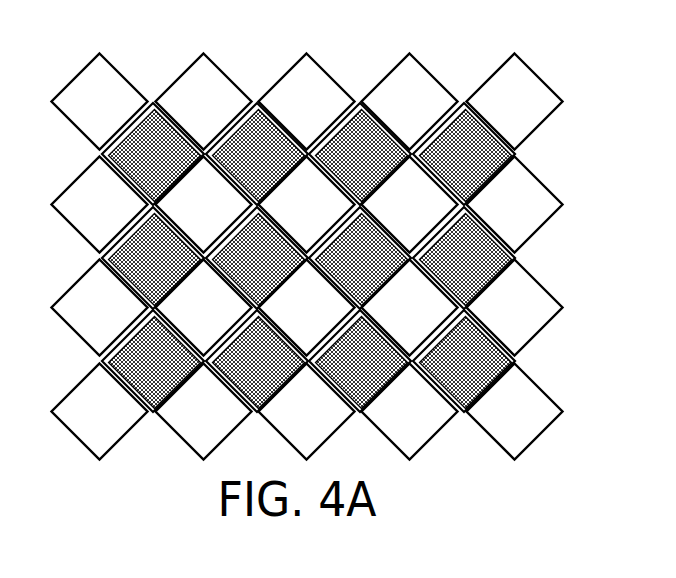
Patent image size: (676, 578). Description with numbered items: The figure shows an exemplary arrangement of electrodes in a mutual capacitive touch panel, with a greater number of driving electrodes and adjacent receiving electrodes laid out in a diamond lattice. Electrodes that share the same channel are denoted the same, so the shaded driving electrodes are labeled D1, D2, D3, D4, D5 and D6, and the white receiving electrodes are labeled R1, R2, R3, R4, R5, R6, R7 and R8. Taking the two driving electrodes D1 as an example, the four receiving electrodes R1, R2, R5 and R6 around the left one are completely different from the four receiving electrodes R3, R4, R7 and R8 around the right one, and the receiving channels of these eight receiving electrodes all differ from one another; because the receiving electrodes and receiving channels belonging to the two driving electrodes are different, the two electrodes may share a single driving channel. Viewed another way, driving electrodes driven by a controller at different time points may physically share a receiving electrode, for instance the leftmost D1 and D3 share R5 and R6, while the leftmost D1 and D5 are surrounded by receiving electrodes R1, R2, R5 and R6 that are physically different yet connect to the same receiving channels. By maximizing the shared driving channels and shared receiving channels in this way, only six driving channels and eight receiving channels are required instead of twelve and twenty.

The receiving electrode R1 is at (307, 205).
The receiving electrode R2 is at (204, 205).
The receiving electrode R3 is at (307, 205).
The receiving electrode R4 is at (410, 205).
The receiving electrode R5 is at (307, 308).
The receiving electrode R6 is at (204, 308).
The receiving electrode R7 is at (307, 308).
The receiving electrode R8 is at (410, 308).
The driving electrode D1 is at (256, 154).
The driving electrode D2 is at (360, 154).
The driving electrode D3 is at (256, 258).
The driving electrode D4 is at (360, 258).
The driving electrode D5 is at (256, 361).
The driving electrode D6 is at (360, 361).